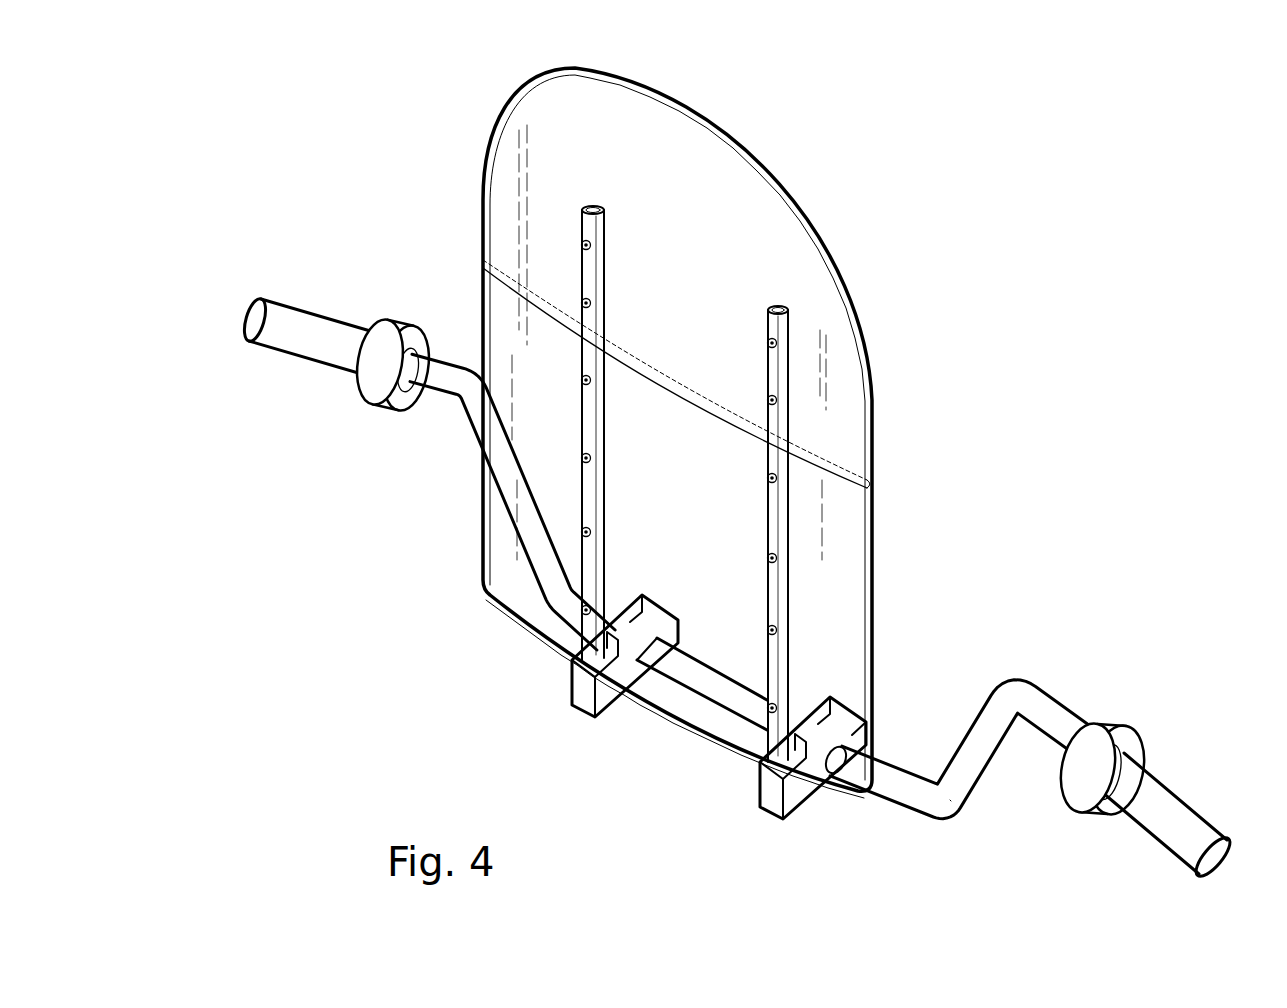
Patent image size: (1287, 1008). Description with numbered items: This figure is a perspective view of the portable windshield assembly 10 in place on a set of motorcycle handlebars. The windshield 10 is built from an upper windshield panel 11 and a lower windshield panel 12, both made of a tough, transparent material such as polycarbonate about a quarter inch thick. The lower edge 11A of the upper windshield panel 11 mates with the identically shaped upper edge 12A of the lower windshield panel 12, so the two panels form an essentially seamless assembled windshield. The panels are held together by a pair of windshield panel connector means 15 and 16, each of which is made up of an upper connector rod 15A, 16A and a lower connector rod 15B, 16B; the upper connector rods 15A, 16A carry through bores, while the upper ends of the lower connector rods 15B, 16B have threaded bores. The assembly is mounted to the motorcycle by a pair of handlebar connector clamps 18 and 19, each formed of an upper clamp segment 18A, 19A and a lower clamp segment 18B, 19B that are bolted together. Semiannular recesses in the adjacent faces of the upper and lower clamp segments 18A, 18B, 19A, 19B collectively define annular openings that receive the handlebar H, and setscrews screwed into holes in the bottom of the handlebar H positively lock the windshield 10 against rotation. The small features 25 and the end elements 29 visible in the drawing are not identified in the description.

The portable windshield assembly 10 is at (438, 122).
The upper windshield panel 11 is at (792, 252).
The lower edge 11A is at (521, 283).
The lower windshield panel 12 is at (857, 685).
The upper edge 12A is at (855, 463).
The windshield panel connector means 15 is at (427, 465).
The upper connector rod 15A is at (687, 372).
The lower connector rod 15B is at (535, 497).
The windshield panel connector means 16 is at (1011, 707).
The upper connector rod 16A is at (777, 372).
The lower connector rod 16B is at (870, 720).
The handlebar connector clamp 18 is at (706, 636).
The upper clamp segment 18A is at (667, 610).
The lower clamp segment 18B is at (657, 638).
The handlebar connector clamp 19 is at (793, 799).
The upper clamp segment 19A is at (766, 732).
The lower clamp segment 19B is at (868, 750).
The adjustment holes 25 is at (583, 303).
The post end caps 29 is at (592, 206).
The handlebar H is at (950, 800).